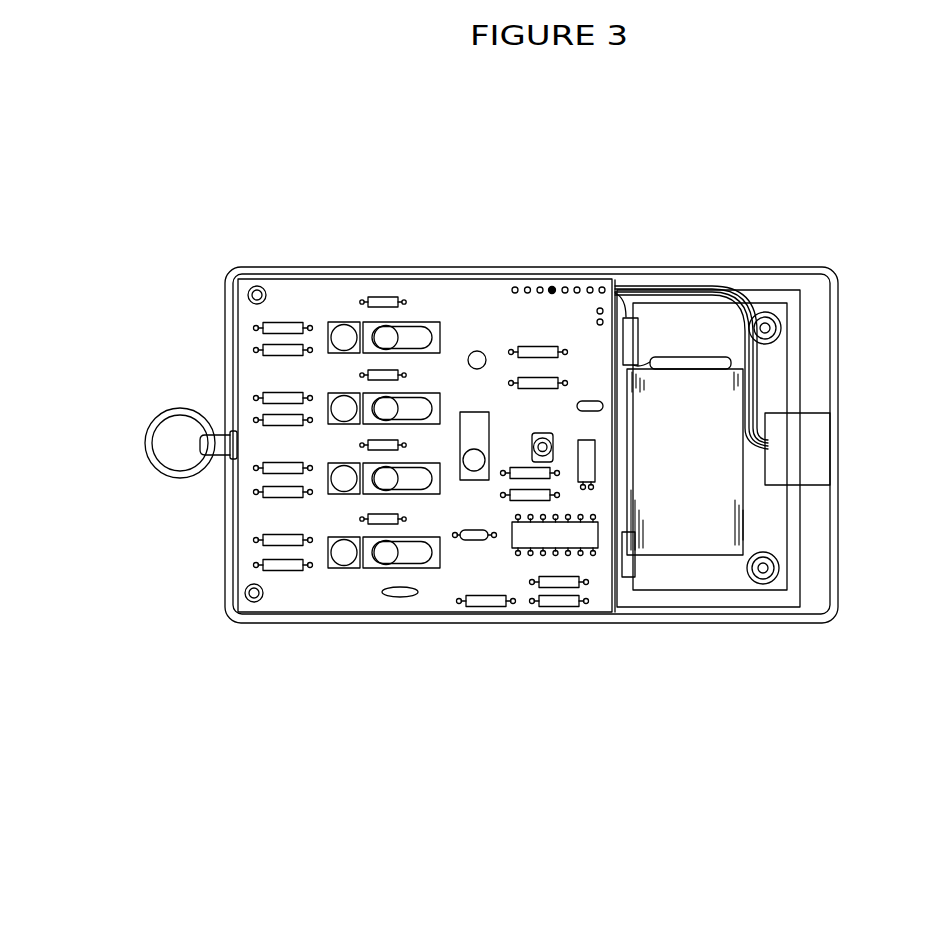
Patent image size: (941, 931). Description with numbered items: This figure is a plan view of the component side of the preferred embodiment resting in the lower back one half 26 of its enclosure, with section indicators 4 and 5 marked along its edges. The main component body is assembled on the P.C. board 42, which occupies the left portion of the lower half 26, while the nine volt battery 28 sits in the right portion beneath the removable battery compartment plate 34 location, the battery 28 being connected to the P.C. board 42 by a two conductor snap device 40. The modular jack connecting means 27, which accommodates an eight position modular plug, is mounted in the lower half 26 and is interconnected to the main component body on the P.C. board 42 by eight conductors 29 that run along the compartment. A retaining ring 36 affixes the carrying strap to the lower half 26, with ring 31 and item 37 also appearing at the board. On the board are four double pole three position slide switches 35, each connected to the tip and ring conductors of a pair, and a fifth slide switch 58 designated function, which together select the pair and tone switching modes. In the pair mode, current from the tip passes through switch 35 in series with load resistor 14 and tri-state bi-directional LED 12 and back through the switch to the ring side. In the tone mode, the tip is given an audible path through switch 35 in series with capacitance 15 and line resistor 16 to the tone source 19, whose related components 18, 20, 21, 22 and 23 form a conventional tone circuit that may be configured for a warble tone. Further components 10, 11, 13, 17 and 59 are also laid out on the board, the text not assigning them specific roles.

The section line 4- 4 is at (232, 282).
The section line 5- 5 is at (532, 328).
The resistor 10 is at (388, 294).
The potentiometer 11 is at (555, 434).
The tri-state bi-directional LED 12 is at (343, 319).
The resistor 13 is at (262, 335).
The load resistor 14 is at (277, 574).
The capacitance 15 is at (393, 600).
The line resistor 16 is at (478, 613).
The resistor 17 is at (548, 612).
The tone source related component 18 is at (557, 575).
The tone source 19 is at (507, 551).
The tone source related component 20 is at (508, 505).
The tone source related component 21 is at (601, 443).
The tone source related component 22 is at (603, 399).
The tone source related component 23 is at (543, 392).
The lower back one half 26 is at (816, 267).
The modular jack connecting means 27 is at (813, 421).
The nine volt battery 28 is at (665, 545).
The eight conductors 29 is at (665, 289).
The key ring 31 is at (173, 407).
The removable battery compartment plate 34 is at (777, 544).
The double pole three position slide switch 35 is at (413, 317).
The retaining ring 36 is at (220, 466).
The indicator 37 is at (479, 349).
The two conductor snap device 40 is at (655, 360).
The P.C. board 42 is at (489, 291).
The fifth slide switch 58 is at (458, 409).
The resistor 59 is at (328, 570).